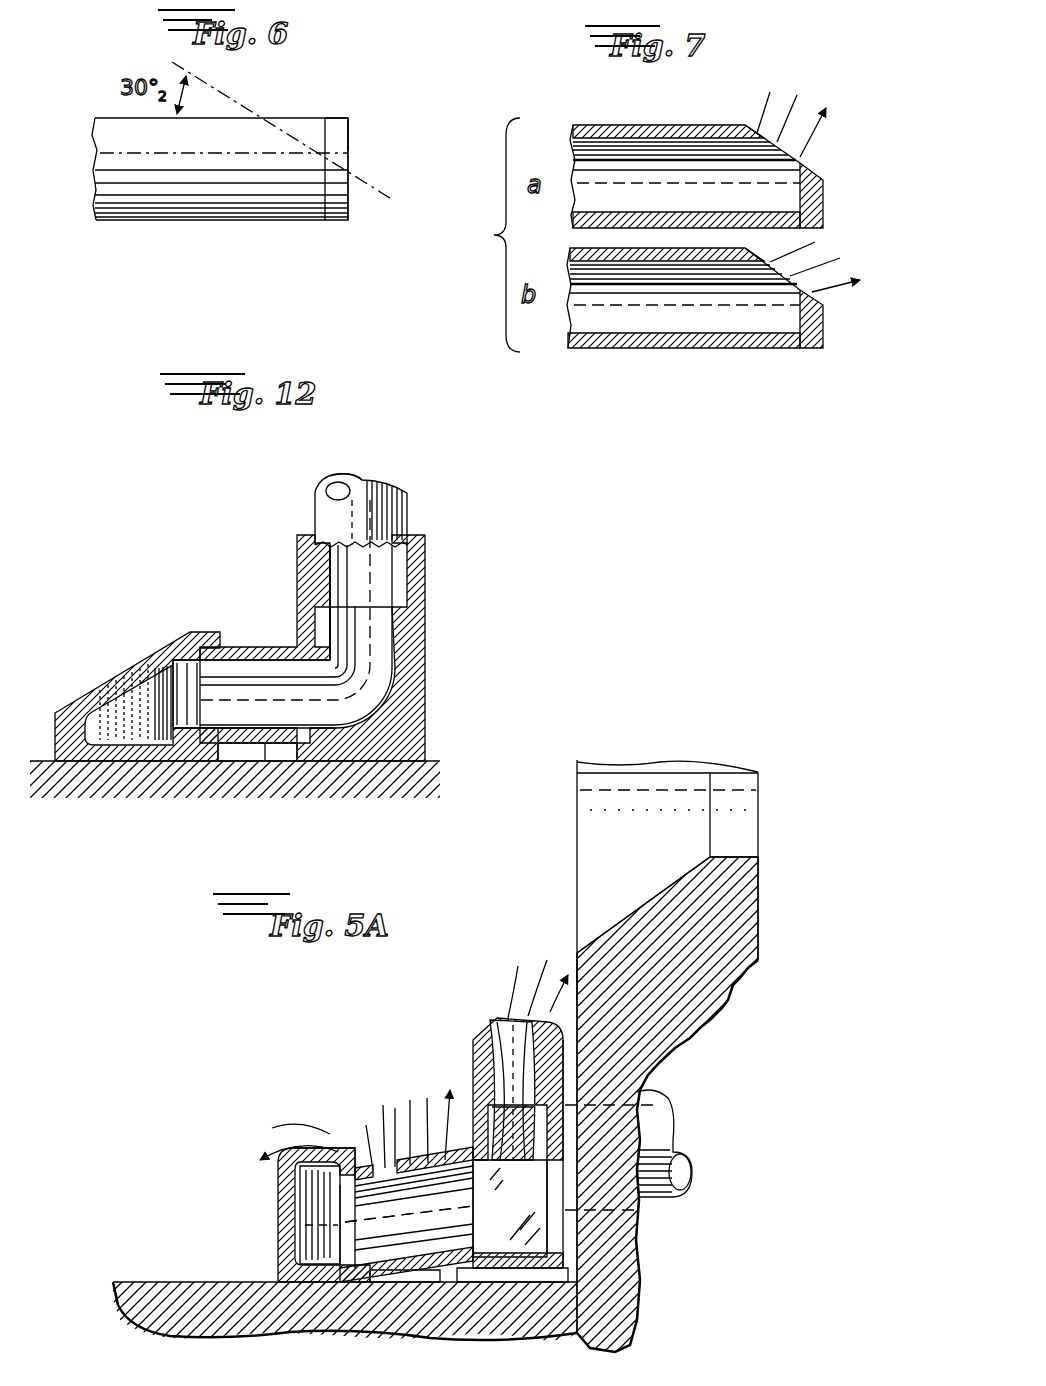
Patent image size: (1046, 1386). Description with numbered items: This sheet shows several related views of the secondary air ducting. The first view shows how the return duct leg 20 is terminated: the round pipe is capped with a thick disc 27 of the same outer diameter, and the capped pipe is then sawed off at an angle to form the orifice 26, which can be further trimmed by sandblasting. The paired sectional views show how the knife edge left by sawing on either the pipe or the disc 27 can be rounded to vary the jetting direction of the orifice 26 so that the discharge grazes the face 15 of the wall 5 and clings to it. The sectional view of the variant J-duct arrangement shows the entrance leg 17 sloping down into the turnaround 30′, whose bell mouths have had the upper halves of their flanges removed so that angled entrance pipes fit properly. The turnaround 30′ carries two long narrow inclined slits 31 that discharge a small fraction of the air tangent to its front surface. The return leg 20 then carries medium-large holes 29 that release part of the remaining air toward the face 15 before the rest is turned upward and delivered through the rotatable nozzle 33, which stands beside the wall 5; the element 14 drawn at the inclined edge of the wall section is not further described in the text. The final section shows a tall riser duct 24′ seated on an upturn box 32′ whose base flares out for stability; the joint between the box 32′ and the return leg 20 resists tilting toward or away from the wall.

In FIG. 6, the return duct leg 20 is at (237, 205).
In FIG. 7, the return duct leg 20 is at (664, 125).
In FIG. 12, the return duct leg 20 is at (265, 745).
In FIG. 5A, the return duct leg 20 is at (429, 1262).
In FIG. 6, the orifice 26 is at (324, 108).
In FIG. 7, the orifice 26 is at (803, 161).
In FIG. 6, the disc 27 is at (336, 218).
In FIG. 7, the disc 27 is at (822, 198).
In FIG. 12, the riser duct 24′ is at (395, 514).
In FIG. 12, the upturn box 32′ is at (412, 697).
In FIG. 5A, the wall 5 is at (742, 932).
In FIG. 5A, the inclined guide surface 14 is at (607, 922).
In FIG. 5A, the face 15 is at (577, 968).
In FIG. 5A, the entrance leg 17 is at (662, 1105).
In FIG. 5A, the holes 29 is at (386, 1186).
In FIG. 5A, the turnaround 30′ is at (278, 1228).
In FIG. 5A, the slits 31 is at (326, 1148).
In FIG. 5A, the nozzle 33 is at (475, 1045).